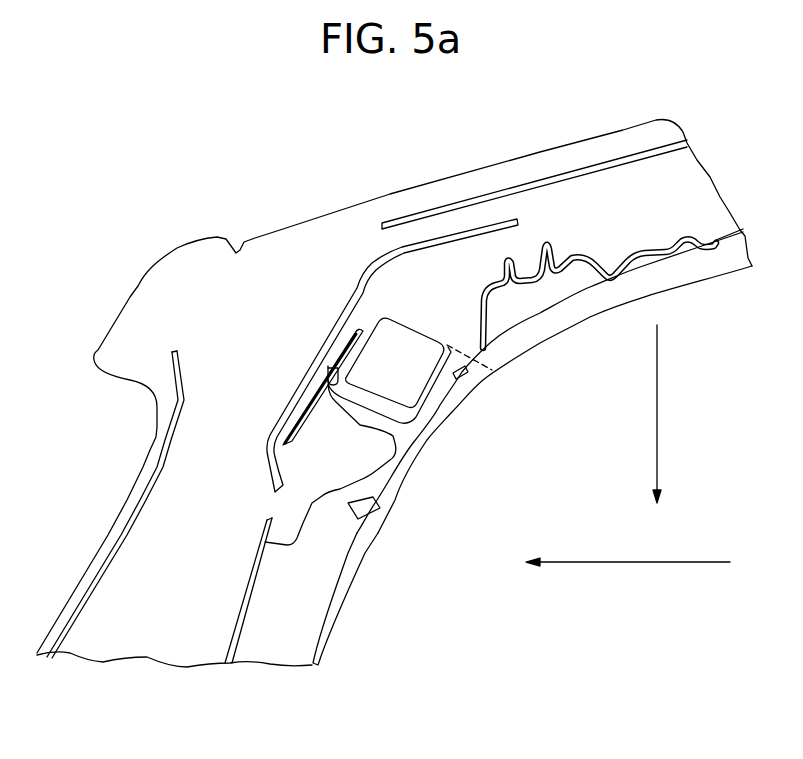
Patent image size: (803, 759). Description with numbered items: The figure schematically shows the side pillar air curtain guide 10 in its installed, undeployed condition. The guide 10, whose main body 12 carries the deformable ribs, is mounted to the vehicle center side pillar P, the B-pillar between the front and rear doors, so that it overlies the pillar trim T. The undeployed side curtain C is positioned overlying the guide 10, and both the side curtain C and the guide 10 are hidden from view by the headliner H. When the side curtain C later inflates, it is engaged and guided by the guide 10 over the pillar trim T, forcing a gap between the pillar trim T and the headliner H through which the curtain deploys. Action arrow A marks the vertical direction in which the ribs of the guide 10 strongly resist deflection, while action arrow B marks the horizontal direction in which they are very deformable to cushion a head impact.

The side pillar air curtain guide 10 is at (300, 554).
The main body 12 is at (312, 462).
The vehicle center side pillar P is at (123, 575).
The pillar trim T is at (340, 597).
The side curtain C is at (397, 377).
The headliner H is at (410, 452).
The action arrow A is at (658, 413).
The action arrow B is at (632, 562).